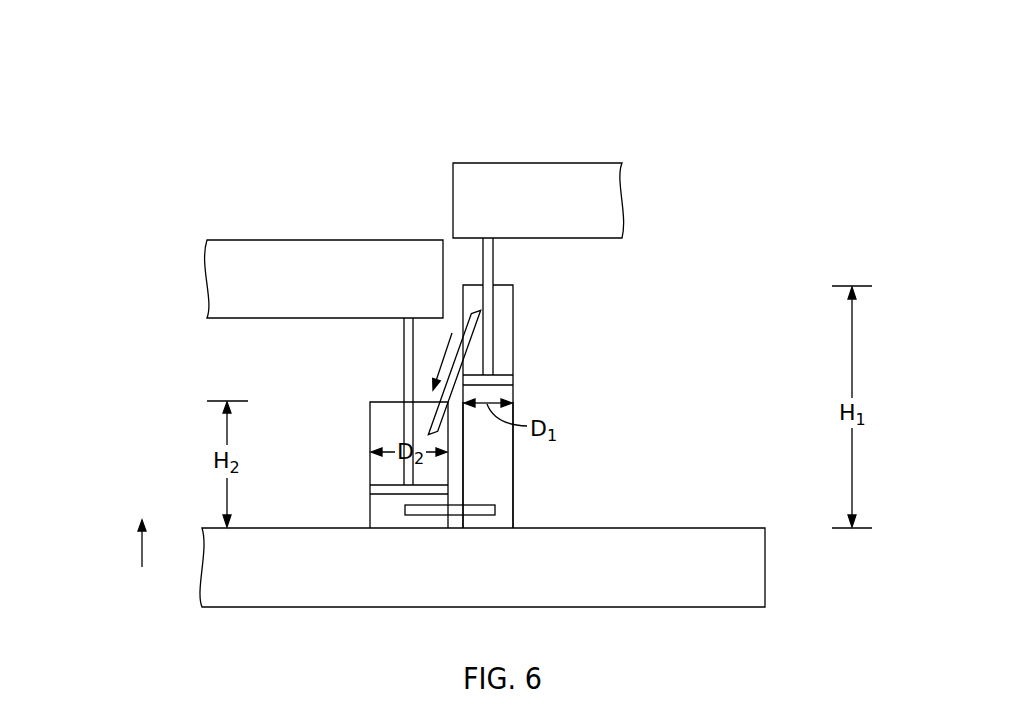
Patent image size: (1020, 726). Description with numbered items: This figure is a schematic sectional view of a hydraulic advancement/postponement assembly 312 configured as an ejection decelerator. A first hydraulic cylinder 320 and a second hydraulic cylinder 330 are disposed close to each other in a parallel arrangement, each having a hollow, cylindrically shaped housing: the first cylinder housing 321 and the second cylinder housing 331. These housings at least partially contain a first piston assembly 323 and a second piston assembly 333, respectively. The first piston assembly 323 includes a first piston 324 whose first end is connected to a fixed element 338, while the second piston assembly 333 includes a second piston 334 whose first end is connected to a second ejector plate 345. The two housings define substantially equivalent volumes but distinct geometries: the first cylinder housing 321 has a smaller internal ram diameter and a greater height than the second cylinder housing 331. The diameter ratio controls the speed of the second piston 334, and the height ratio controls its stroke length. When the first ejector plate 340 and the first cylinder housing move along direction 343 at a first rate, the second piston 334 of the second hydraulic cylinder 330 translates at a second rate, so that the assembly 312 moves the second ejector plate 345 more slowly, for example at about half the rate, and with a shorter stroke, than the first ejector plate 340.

The hydraulic advancement/postponement assembly 312 is at (688, 98).
The fixed element 338 is at (583, 163).
The second ejector plate 345 is at (243, 240).
The first ejector plate 340 is at (765, 563).
The first piston 324 is at (493, 263).
The first piston assembly 323 is at (525, 308).
The first cylinder housing 321 is at (513, 460).
The first hydraulic cylinder 320 is at (527, 375).
The second hydraulic cylinder 330 is at (356, 436).
The second cylinder housing 331 is at (370, 473).
The second piston 334 is at (404, 352).
The second piston assembly 333 is at (374, 384).
The direction 343 is at (140, 548).